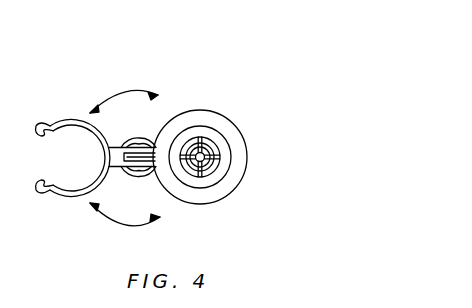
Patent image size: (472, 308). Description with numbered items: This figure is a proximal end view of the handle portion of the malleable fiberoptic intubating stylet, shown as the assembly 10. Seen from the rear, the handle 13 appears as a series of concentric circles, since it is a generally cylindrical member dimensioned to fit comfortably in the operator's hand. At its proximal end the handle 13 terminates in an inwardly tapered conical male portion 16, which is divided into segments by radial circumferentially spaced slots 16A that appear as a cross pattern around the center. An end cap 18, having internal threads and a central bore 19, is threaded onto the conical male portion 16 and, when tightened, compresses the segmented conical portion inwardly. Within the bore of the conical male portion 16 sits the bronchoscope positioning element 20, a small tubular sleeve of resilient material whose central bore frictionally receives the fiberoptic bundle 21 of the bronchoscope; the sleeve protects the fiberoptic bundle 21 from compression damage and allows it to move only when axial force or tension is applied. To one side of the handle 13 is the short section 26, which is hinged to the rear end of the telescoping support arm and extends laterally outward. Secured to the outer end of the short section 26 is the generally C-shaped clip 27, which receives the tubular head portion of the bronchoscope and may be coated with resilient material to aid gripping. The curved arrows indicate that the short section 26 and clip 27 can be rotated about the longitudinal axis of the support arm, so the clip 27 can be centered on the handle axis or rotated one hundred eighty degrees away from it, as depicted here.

The holder assembly 10 is at (183, 141).
The handle 13 is at (245, 175).
The conical male portion 16 is at (217, 148).
The radial circumferentially spaced slots 16A is at (214, 157).
The end cap 18 is at (210, 123).
The central bore 19 is at (195, 175).
The bronchoscope positioning element 20 is at (212, 173).
The fiberoptic bundle 21 is at (195, 140).
The short section 26 is at (118, 172).
The C-shaped clip 27 is at (72, 119).